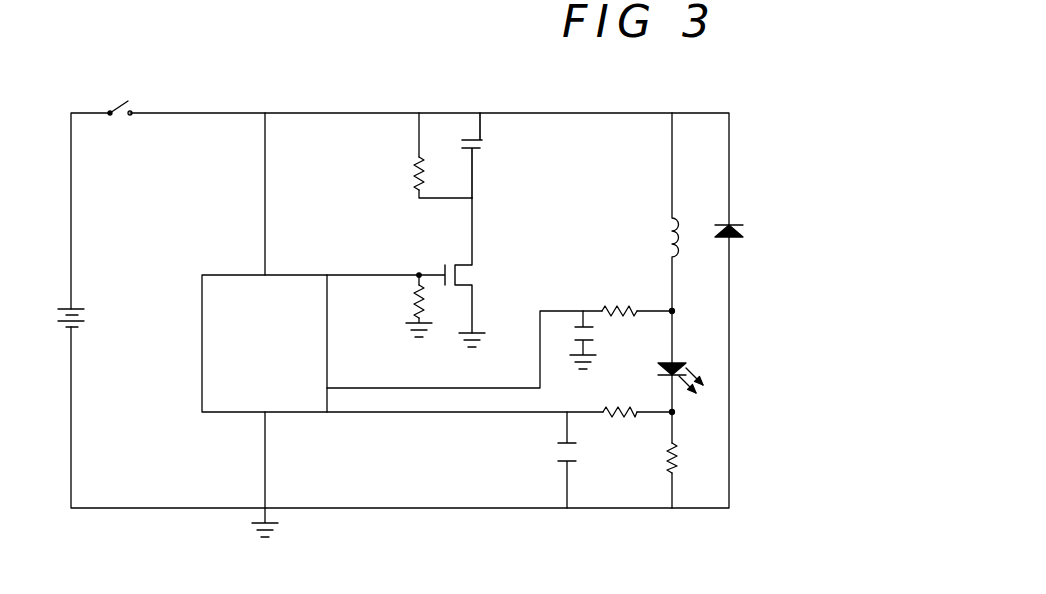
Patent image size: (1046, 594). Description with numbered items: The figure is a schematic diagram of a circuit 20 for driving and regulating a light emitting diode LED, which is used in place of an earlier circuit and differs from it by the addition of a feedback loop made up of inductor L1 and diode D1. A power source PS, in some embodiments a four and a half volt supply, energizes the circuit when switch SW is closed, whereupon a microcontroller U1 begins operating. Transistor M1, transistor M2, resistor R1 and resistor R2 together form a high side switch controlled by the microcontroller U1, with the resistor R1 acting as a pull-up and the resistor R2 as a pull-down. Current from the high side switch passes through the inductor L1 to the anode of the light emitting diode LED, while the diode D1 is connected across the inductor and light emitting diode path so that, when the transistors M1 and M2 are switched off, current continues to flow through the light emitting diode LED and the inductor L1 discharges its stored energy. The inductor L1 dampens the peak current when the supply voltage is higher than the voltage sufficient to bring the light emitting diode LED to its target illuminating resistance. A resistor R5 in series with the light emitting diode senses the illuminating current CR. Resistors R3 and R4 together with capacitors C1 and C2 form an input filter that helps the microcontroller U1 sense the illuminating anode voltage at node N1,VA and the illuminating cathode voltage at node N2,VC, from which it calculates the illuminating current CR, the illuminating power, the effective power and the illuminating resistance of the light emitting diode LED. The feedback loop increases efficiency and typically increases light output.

The circuit 20 is at (752, 78).
The switch SW is at (118, 106).
The power source PS is at (82, 309).
The microcontroller U1 is at (222, 292).
The resistor R1 is at (419, 175).
The transistor M1 is at (462, 138).
The transistor M2 is at (465, 288).
The resistor R2 is at (418, 290).
The resistor R3 is at (617, 311).
The capacitor C1 is at (577, 340).
The capacitor C2 is at (558, 461).
The resistor R4 is at (622, 412).
The resistor R5 is at (675, 465).
The inductor L1 is at (683, 224).
The diode D1 is at (746, 226).
The node N1 / illuminating anode voltage VA N1,VA is at (672, 311).
The illuminating current CR is at (676, 345).
The light emitting diode LED is at (690, 377).
The node N2 / illuminating cathode voltage VC N2,VC is at (672, 412).